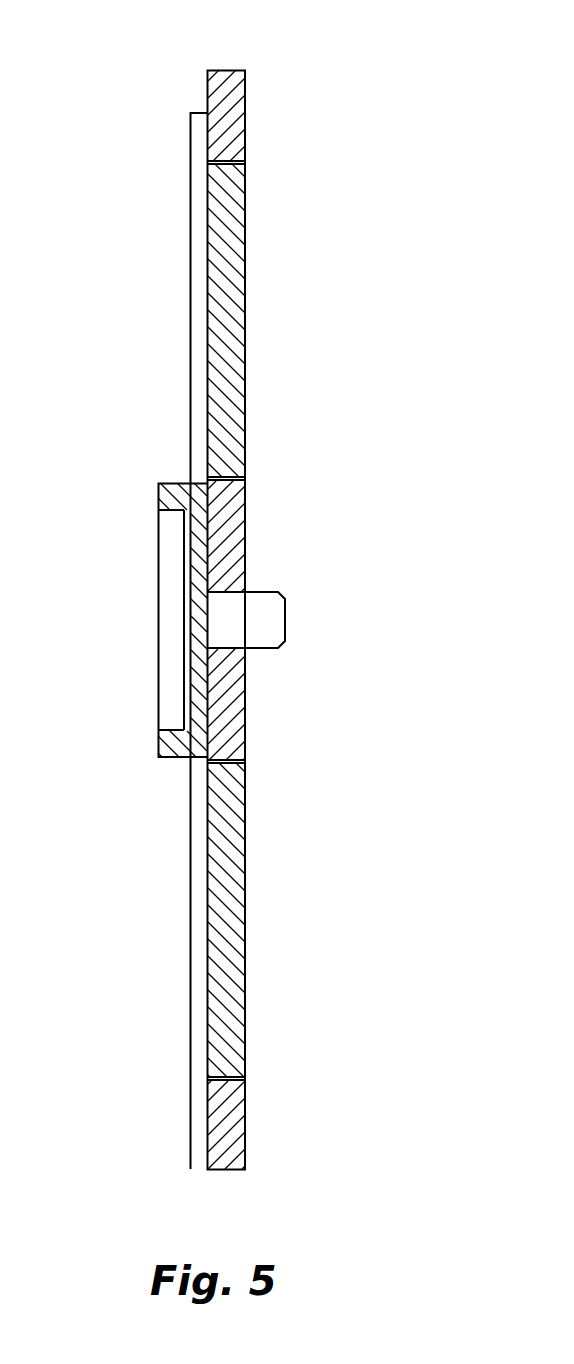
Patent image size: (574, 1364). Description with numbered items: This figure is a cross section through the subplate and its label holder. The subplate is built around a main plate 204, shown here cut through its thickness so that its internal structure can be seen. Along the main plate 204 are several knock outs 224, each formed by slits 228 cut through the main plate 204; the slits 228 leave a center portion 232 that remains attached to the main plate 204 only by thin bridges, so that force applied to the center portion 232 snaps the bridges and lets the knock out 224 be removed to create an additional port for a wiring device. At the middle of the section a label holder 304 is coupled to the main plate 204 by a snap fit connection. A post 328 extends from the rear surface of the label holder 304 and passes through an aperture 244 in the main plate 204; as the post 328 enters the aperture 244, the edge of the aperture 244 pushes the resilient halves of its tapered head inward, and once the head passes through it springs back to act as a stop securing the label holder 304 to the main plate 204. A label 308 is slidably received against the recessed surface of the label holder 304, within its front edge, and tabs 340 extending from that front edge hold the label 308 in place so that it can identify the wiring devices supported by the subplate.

The main plate 204 is at (226, 85).
The knock out 224 is at (252, 184).
The slit 228 is at (207, 162).
The center portion 232 is at (228, 313).
The label holder 304 is at (228, 508).
The tab 340 is at (163, 512).
The label 308 is at (184, 592).
The post 328 is at (262, 603).
The aperture 244 is at (228, 648).